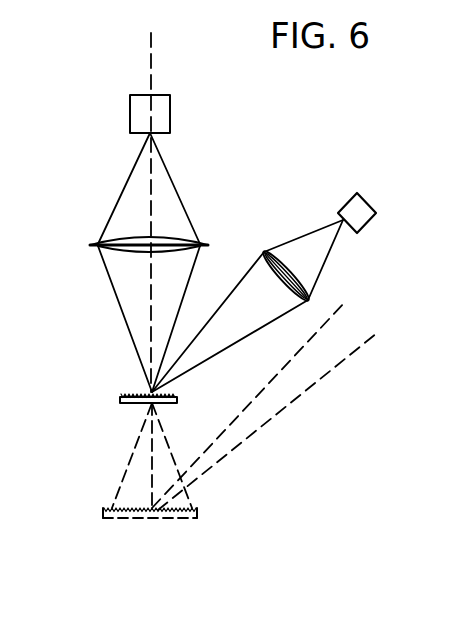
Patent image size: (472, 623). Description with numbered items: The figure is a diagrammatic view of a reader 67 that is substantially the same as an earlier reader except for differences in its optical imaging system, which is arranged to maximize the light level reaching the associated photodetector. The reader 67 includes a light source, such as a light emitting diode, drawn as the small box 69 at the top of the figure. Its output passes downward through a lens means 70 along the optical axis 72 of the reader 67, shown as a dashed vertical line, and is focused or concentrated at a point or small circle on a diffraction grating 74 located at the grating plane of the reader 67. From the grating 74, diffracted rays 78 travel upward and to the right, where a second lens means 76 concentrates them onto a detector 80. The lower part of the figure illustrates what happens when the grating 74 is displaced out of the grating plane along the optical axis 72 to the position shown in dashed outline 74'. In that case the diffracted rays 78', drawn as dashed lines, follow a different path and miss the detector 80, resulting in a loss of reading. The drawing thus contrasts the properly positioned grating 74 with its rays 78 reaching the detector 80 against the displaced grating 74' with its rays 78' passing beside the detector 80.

The reader 67 is at (97, 227).
The light source 69 is at (170, 108).
The lens means 70 is at (92, 250).
The optical axis 72 is at (149, 52).
The diffraction grating 74 is at (109, 375).
The displaced grating position 74' is at (115, 460).
The second lens means 76 is at (270, 250).
The diffracted rays 78 is at (247, 309).
The diffracted rays from displaced grating 78' is at (266, 406).
The detector 80 is at (348, 202).